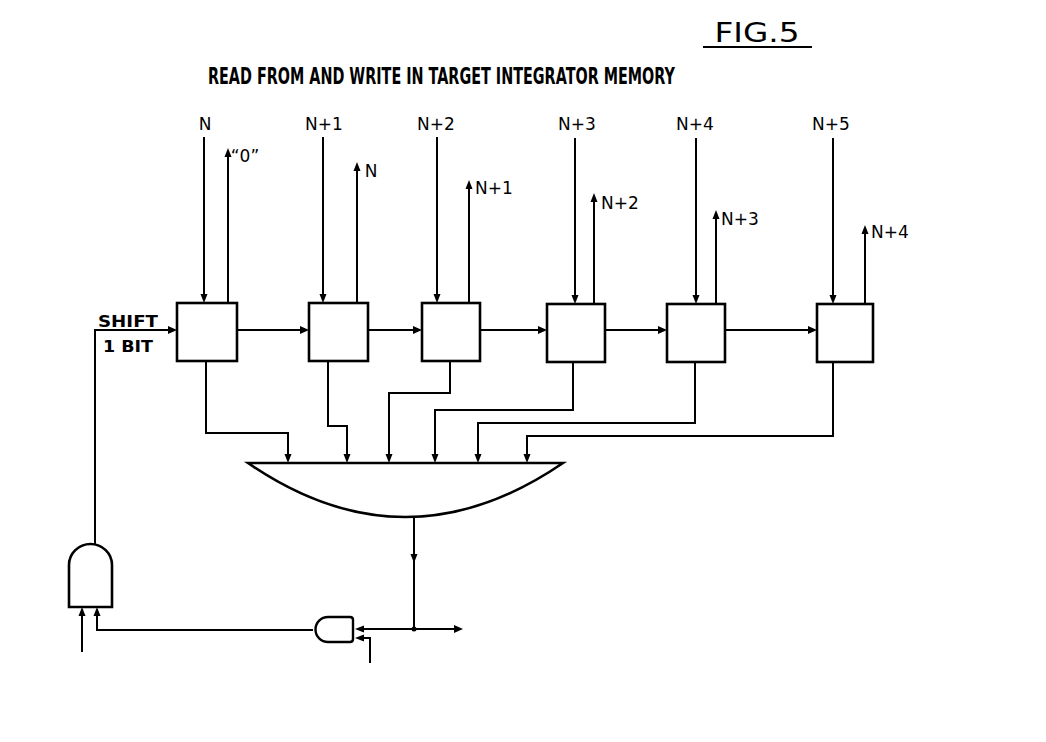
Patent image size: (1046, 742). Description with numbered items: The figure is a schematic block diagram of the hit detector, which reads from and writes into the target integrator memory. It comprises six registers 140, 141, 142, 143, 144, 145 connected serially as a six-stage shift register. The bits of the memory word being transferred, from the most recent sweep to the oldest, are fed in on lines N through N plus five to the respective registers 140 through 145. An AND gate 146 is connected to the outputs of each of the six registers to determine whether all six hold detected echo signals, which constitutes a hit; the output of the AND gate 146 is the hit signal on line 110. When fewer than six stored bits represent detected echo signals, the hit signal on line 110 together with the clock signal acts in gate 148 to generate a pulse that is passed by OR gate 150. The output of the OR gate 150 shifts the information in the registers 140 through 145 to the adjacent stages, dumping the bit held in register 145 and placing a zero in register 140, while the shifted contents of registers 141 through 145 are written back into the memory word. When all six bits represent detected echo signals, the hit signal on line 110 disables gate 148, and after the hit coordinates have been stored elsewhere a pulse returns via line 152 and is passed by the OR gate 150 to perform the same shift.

The register 140 is at (200, 303).
The register 141 is at (313, 303).
The register 142 is at (480, 311).
The register 143 is at (605, 312).
The register 144 is at (725, 312).
The register 145 is at (873, 312).
The AND gate 146 is at (531, 491).
The gate 148 is at (353, 594).
The OR gate 150 is at (112, 562).
The line 152 is at (82, 652).
The line 110 is at (436, 631).